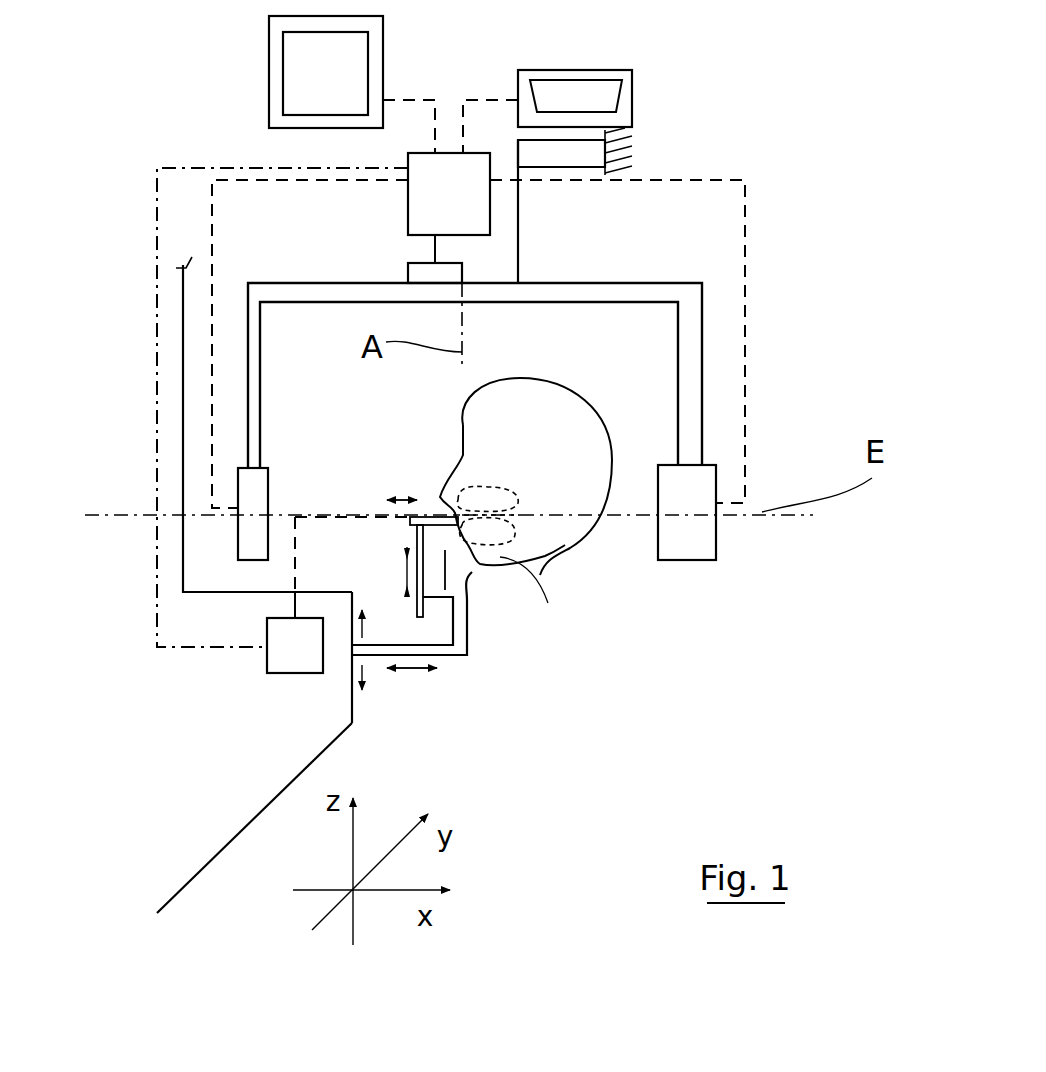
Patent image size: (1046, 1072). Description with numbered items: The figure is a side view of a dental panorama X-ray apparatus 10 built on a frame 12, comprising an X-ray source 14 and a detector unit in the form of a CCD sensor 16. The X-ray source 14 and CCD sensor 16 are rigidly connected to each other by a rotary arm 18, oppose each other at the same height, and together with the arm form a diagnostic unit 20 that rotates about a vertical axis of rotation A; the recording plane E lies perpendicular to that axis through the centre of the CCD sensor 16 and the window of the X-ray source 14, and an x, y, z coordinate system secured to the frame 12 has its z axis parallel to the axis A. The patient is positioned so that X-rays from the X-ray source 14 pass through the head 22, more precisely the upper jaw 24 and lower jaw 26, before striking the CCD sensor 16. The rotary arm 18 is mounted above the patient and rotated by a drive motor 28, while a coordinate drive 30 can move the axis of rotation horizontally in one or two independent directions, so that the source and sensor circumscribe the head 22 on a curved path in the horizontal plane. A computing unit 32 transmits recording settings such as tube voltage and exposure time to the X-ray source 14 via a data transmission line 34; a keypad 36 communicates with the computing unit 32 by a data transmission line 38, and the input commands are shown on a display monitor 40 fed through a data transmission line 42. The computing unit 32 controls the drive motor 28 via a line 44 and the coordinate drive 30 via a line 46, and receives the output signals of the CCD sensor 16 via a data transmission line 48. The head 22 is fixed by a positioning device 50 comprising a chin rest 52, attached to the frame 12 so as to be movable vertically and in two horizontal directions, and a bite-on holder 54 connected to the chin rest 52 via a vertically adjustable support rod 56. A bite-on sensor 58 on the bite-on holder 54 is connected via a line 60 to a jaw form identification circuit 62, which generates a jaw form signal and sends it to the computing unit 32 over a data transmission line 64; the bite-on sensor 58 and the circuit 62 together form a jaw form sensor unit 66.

The dental panorama X-ray apparatus 10 is at (613, 620).
The frame 12 is at (630, 145).
The X-ray source 14 is at (700, 550).
The CCD sensor 16 is at (252, 500).
The rotary arm 18 is at (630, 292).
The diagnostic unit 20 is at (720, 386).
The head 22 is at (607, 395).
The upper jaw 24 is at (478, 470).
The lower jaw 26 is at (513, 524).
The drive motor 28 is at (494, 286).
The coordinate drive 30 is at (568, 150).
The computing unit 32 is at (425, 210).
The data transmission line 34 is at (745, 262).
The keypad 36 is at (632, 92).
The data transmission line 38 is at (495, 100).
The display monitor 40 is at (270, 60).
The data transmission line 42 is at (428, 100).
The line 44 is at (435, 256).
The line 46 is at (520, 245).
The data transmission line 48 is at (213, 228).
The positioning device 50 is at (433, 686).
The chin rest 52 is at (474, 586).
The bite-on holder 54 is at (437, 504).
The support rod 56 is at (410, 530).
The bite-on sensor 58 is at (428, 512).
The line 60 is at (297, 578).
The jaw form identification circuit 62 is at (300, 652).
The data transmission line 64 is at (155, 407).
The jaw form sensor unit 66 is at (288, 568).